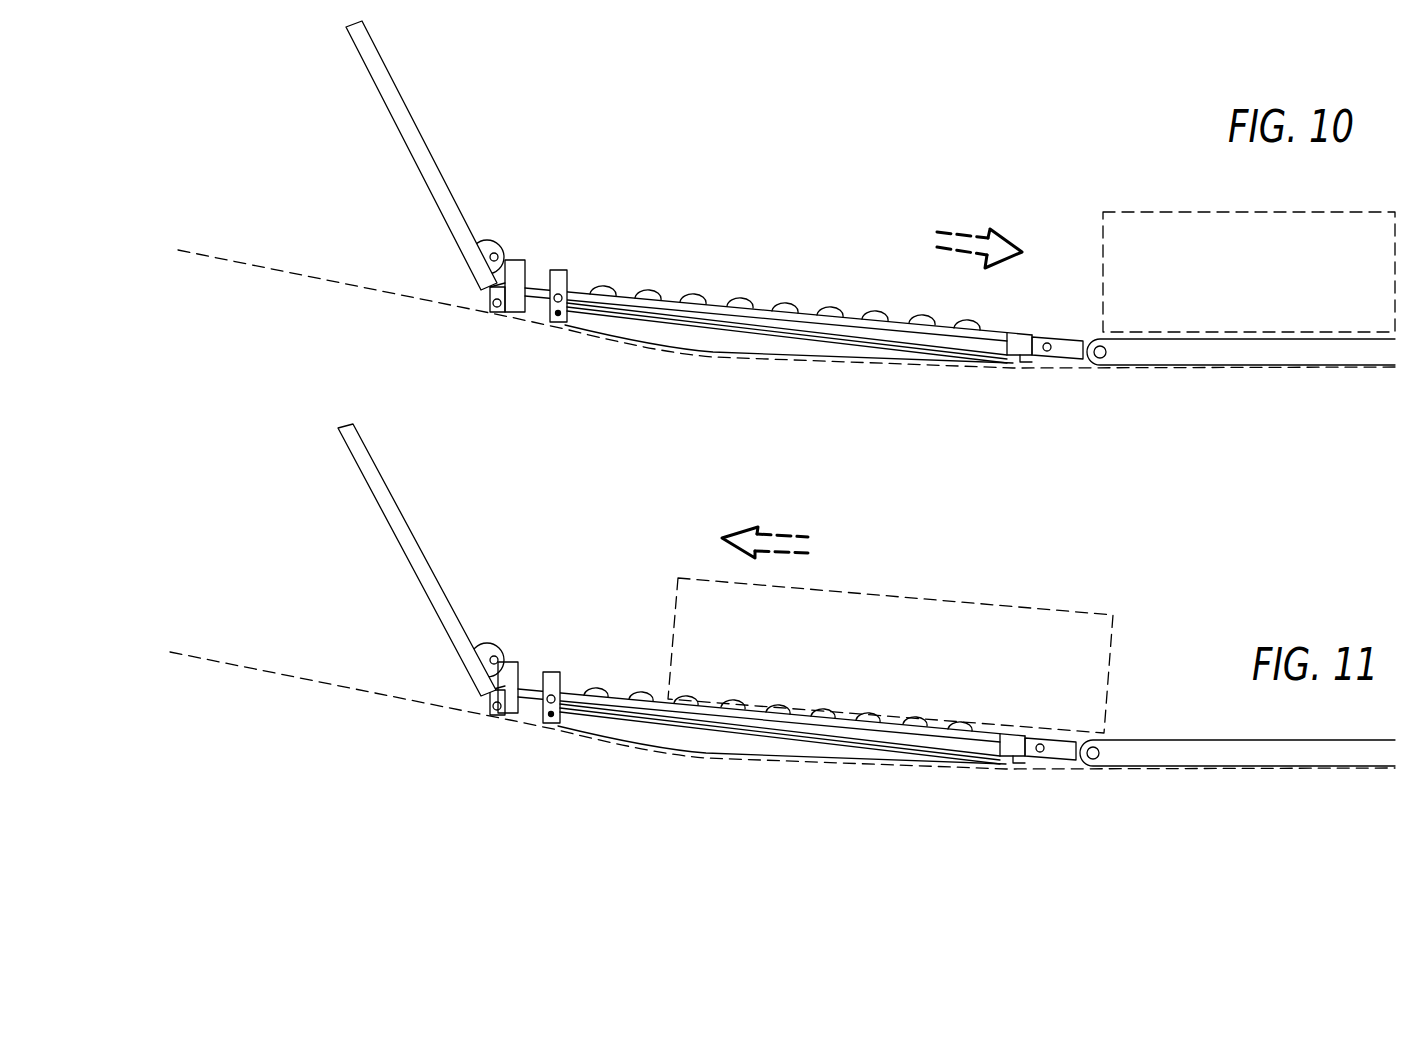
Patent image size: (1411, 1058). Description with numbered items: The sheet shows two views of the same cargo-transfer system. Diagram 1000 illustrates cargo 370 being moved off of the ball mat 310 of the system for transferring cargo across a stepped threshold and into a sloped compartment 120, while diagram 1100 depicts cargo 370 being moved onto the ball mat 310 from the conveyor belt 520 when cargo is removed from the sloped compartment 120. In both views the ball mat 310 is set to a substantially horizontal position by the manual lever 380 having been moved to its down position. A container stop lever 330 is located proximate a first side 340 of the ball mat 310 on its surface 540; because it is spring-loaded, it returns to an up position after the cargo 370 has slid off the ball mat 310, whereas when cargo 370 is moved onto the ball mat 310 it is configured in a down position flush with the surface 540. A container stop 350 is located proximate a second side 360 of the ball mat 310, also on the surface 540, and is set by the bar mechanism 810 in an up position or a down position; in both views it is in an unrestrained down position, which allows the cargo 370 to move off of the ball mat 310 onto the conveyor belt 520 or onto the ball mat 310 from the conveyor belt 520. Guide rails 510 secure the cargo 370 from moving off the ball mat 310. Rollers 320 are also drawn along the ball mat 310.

In FIG. 10, the sloped compartment 120 is at (285, 218).
In FIG. 11, the sloped compartment 120 is at (265, 610).
In FIG. 10, the ball mat 310 is at (1018, 340).
In FIG. 11, the ball mat 310 is at (982, 740).
In FIG. 10, the rollers 320 is at (694, 300).
In FIG. 11, the rollers 320 is at (686, 705).
In FIG. 10, the container stop lever 330 is at (563, 283).
In FIG. 11, the container stop lever 330 is at (551, 688).
In FIG. 10, the first side 340 is at (503, 284).
In FIG. 11, the first side 340 is at (490, 688).
In FIG. 10, the container stop 350 is at (1075, 355).
In FIG. 11, the container stop 350 is at (1018, 744).
In FIG. 10, the second side 360 is at (1043, 364).
In FIG. 11, the second side 360 is at (1033, 764).
In FIG. 10, the cargo 370 is at (1178, 225).
In FIG. 11, the cargo 370 is at (873, 610).
In FIG. 10, the manual lever 380 is at (402, 137).
In FIG. 11, the manual lever 380 is at (398, 553).
In FIG. 10, the guide rails 510 is at (516, 268).
In FIG. 11, the guide rails 510 is at (506, 670).
In FIG. 10, the conveyor belt 520 is at (1178, 354).
In FIG. 11, the conveyor belt 520 is at (1123, 757).
In FIG. 10, the surface 540 is at (990, 327).
In FIG. 11, the surface 540 is at (978, 733).
In FIG. 10, the bar mechanism 810 is at (771, 333).
In FIG. 11, the bar mechanism 810 is at (800, 745).
In FIG. 10, the diagram 1000 is at (1118, 109).
In FIG. 11, the diagram 1100 is at (1161, 570).